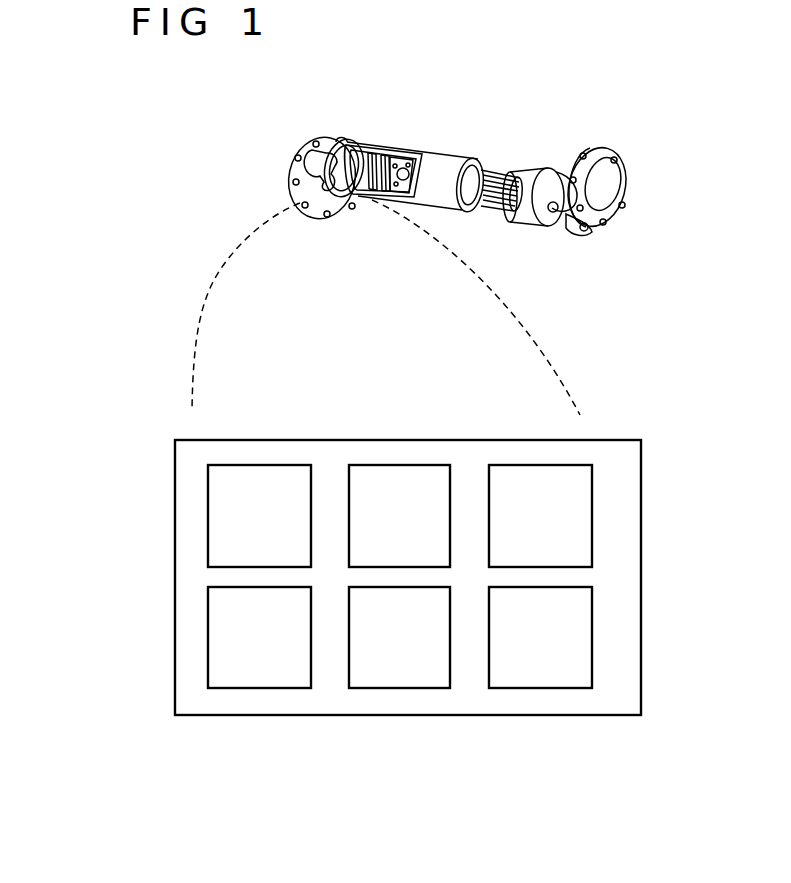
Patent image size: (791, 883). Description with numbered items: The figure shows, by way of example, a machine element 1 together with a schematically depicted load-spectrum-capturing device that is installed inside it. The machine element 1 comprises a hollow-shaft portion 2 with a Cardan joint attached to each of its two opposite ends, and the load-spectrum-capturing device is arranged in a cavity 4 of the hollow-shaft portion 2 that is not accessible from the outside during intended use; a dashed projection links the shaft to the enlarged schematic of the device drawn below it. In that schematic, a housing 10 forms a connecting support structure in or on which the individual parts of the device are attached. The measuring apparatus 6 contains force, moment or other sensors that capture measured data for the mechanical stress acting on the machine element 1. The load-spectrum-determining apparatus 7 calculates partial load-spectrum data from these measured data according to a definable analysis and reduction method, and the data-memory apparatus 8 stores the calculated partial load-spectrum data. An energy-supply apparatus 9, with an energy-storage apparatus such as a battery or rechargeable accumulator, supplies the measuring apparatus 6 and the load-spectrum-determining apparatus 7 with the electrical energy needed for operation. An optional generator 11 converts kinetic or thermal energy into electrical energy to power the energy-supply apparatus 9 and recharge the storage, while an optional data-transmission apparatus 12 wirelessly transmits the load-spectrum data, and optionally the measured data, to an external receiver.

The machine element 1 is at (567, 86).
The hollow-shaft portion 2 is at (466, 140).
The cavity 4 is at (409, 147).
The measuring apparatus 6 is at (207, 516).
The load-spectrum-determining apparatus 7 is at (207, 641).
The data-memory apparatus 8 is at (399, 465).
The energy-supply apparatus 9 is at (400, 689).
The housing 10 is at (525, 716).
The generator 11 is at (592, 515).
The data-transmission apparatus 12 is at (592, 640).